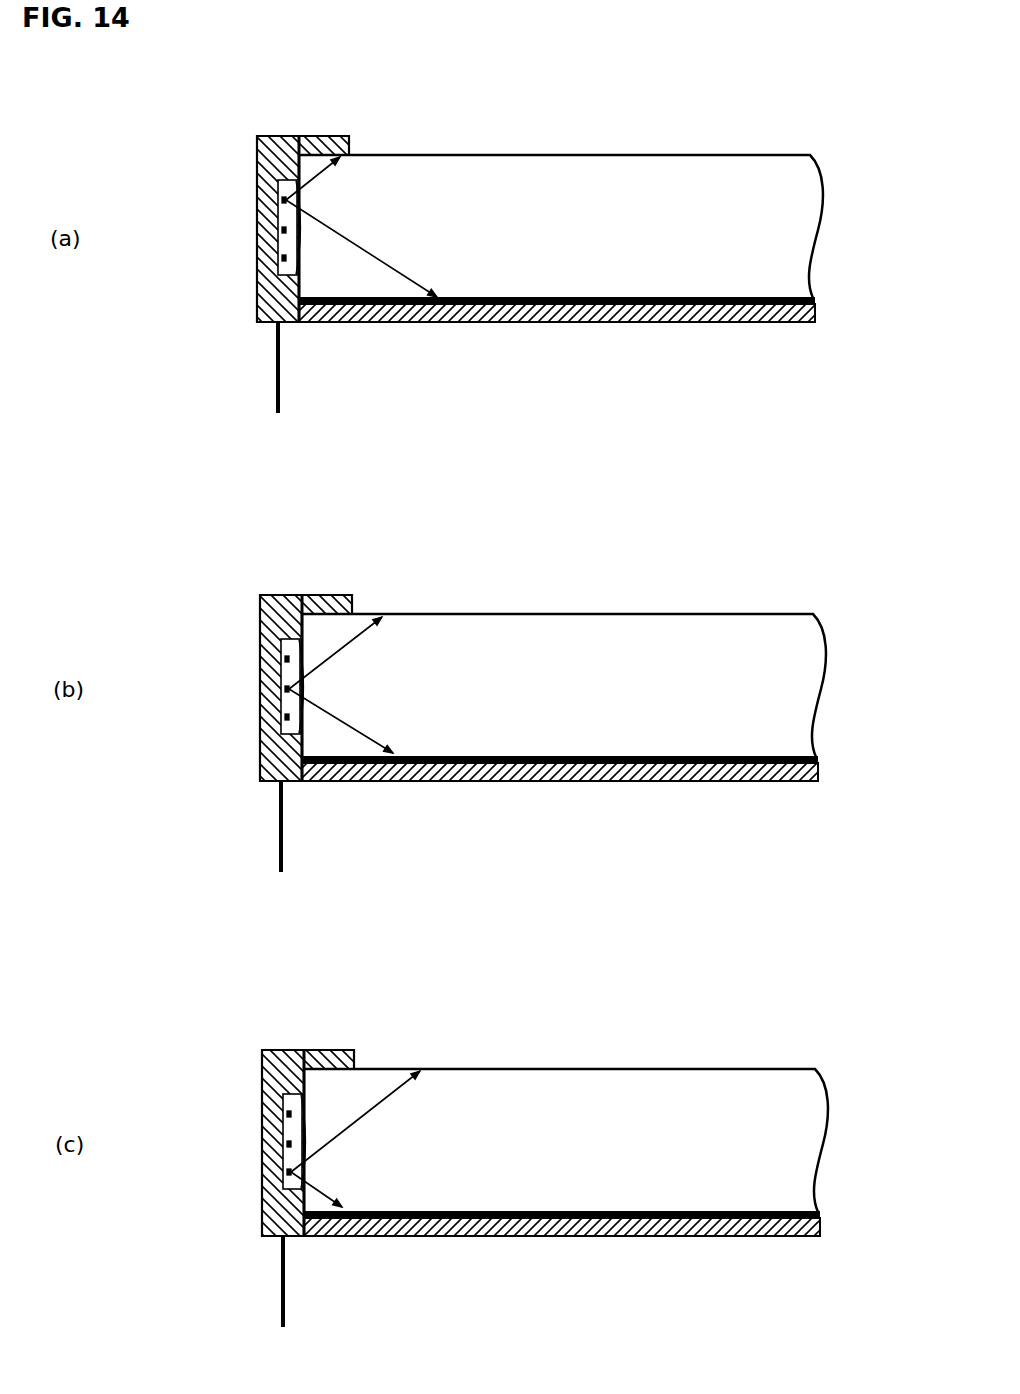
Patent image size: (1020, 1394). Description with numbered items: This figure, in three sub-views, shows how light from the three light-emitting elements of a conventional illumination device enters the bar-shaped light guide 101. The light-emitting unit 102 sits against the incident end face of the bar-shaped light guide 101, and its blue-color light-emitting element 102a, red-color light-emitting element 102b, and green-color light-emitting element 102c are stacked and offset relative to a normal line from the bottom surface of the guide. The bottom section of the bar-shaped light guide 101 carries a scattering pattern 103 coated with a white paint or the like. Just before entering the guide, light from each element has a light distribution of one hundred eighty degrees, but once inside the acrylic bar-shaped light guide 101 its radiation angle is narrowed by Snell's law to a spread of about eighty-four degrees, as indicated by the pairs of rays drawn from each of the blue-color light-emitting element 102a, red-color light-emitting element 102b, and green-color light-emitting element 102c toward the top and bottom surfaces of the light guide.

The bar-shaped light guide 101 is at (578, 172).
The light-emitting unit 102 is at (262, 136).
The blue-color light-emitting element 102a is at (282, 200).
The red-color light-emitting element 102b is at (282, 230).
The green-color light-emitting element 102c is at (282, 258).
The scattering pattern 103 is at (580, 322).